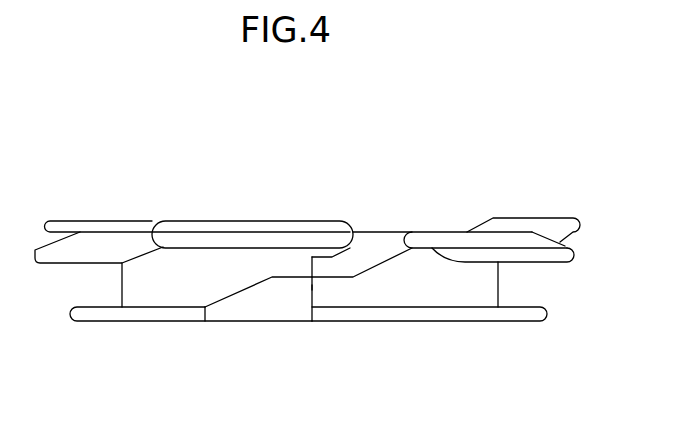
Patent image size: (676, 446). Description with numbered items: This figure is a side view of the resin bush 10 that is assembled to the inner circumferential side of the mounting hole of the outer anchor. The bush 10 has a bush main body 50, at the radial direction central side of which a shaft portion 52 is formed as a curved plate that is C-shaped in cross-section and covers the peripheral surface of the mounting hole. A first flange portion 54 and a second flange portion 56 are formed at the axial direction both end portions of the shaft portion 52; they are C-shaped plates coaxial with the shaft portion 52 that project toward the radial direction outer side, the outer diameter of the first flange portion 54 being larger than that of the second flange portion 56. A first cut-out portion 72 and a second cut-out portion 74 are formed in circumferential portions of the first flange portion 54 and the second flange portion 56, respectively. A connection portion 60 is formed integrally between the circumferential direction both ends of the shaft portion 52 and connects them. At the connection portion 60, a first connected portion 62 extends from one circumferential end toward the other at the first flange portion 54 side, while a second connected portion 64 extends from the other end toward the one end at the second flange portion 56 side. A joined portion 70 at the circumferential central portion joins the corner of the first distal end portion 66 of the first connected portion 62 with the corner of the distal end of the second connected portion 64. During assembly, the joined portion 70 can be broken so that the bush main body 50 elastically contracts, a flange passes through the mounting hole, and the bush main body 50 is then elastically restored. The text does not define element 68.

The bush 10 is at (134, 216).
The bush main body 50 is at (487, 231).
The shaft portion 52 is at (463, 290).
The first flange portion 54 is at (528, 232).
The second flange portion 56 is at (523, 315).
The connection portion 60 is at (312, 287).
The first connected portion 62 is at (285, 270).
The second connected portion 64 is at (338, 283).
The first distal end portion 66 is at (312, 276).
The bent portion 68 is at (317, 285).
The joined portion 70 is at (313, 277).
The first cut-out portion 72 is at (403, 231).
The second cut-out portion 74 is at (208, 314).